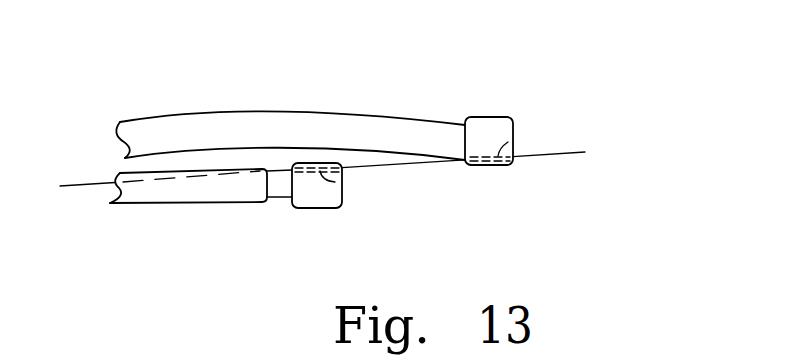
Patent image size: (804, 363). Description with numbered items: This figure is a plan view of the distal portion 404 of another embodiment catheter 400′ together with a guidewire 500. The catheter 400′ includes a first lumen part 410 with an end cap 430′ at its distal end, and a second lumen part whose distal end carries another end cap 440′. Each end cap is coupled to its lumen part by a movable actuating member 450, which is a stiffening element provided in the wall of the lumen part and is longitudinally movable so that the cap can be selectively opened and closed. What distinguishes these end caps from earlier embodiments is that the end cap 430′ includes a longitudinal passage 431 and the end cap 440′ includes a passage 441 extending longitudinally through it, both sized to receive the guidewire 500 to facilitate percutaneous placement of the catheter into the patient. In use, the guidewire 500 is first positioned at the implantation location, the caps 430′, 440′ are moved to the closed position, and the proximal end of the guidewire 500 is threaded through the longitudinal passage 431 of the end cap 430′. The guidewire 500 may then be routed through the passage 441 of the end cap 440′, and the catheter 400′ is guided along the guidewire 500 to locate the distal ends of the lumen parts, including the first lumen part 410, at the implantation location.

The catheter 400′ is at (152, 80).
The distal portion 404 is at (226, 68).
The first lumen part 410 is at (266, 101).
The end cap 430′ is at (566, 72).
The passage 431 is at (508, 147).
The passage 441 is at (338, 181).
The end cap 440′ is at (410, 208).
The actuating member 450 is at (280, 201).
The guidewire 500 is at (563, 177).